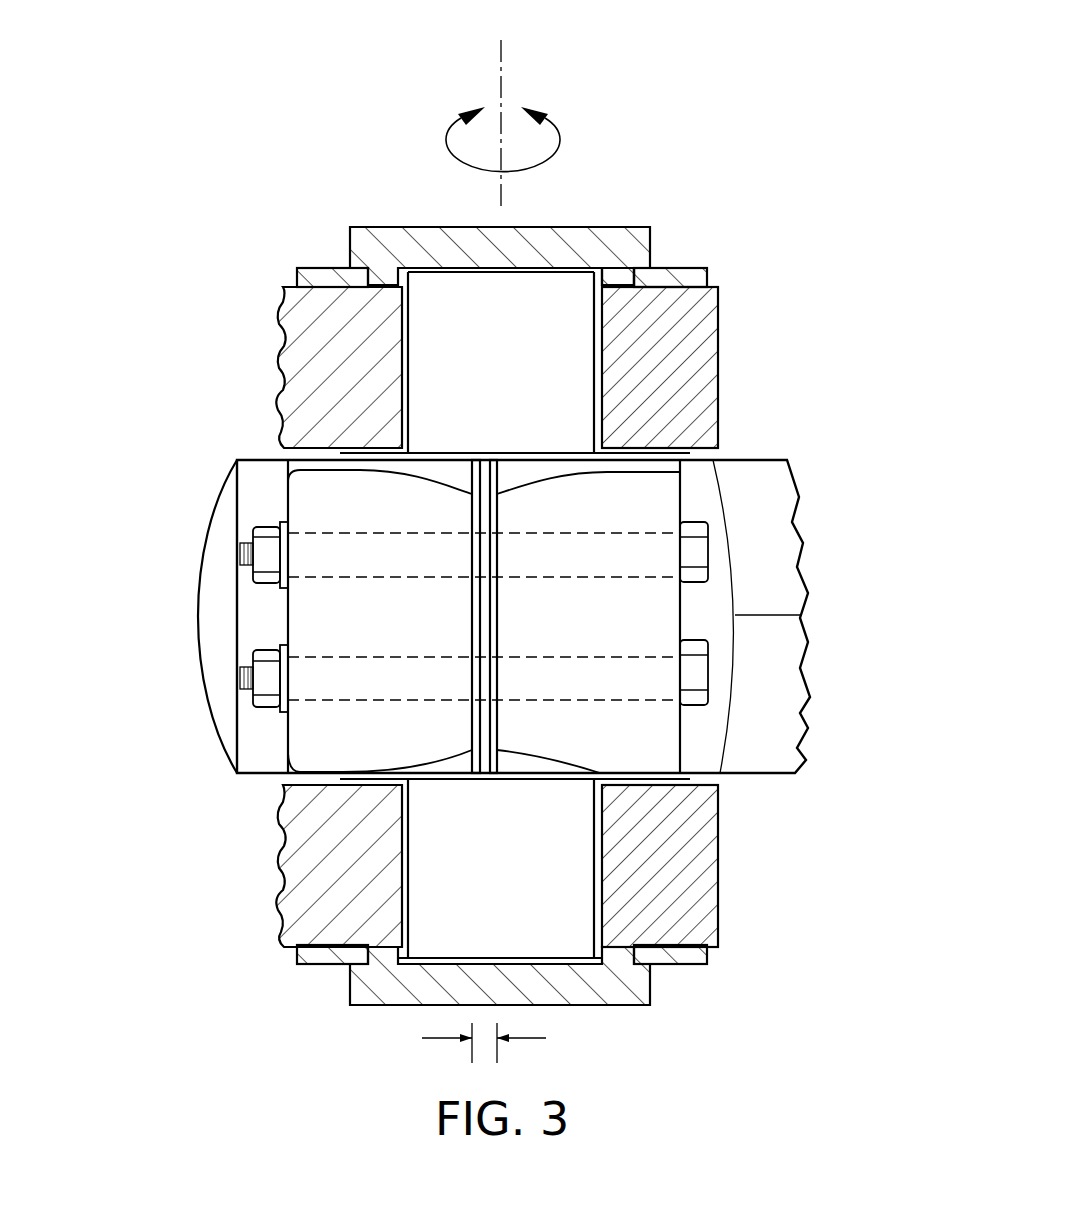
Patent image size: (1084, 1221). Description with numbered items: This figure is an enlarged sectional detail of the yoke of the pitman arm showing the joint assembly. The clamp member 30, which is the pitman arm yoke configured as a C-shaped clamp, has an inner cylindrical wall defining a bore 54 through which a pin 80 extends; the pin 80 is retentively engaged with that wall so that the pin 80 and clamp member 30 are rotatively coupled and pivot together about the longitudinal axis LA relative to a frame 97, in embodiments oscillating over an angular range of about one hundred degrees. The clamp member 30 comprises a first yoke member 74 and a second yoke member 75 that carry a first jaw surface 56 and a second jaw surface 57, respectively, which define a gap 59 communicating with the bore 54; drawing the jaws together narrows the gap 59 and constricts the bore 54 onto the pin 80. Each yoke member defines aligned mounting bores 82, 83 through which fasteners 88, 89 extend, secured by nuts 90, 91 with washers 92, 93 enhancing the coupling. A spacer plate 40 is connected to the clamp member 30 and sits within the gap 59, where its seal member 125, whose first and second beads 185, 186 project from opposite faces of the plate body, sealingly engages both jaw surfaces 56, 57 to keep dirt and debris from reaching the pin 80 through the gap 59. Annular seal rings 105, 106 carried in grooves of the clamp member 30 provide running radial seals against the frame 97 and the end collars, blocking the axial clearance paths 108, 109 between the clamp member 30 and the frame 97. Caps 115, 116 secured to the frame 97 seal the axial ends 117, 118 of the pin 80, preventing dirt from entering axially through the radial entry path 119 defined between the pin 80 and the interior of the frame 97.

The longitudinal axis LA is at (501, 58).
The clamp member 30 is at (330, 610).
The spacer plate 40 is at (497, 633).
The bore 54 is at (533, 448).
The first jaw surface 56 is at (487, 583).
The second jaw surface 57 is at (643, 725).
The gap 59 is at (490, 1062).
The first yoke member 74 is at (478, 665).
The second yoke member 75 is at (480, 683).
The pin 80 is at (430, 300).
The mounting bore 82 is at (337, 575).
The mounting bore 83 is at (307, 703).
The fastener 88 is at (695, 545).
The fastener 89 is at (700, 673).
The nut 90 is at (267, 532).
The nut 91 is at (263, 657).
The washer 92 is at (285, 595).
The washer 93 is at (287, 627).
The frame 97 is at (330, 352).
The seal ring 105 is at (292, 453).
The seal ring 106 is at (283, 787).
The axial clearance path 108 is at (684, 455).
The axial clearance path 109 is at (698, 777).
The cap 115 is at (380, 227).
The cap 116 is at (393, 1008).
The axial end 117 is at (603, 227).
The axial end 118 is at (472, 957).
The radial entry path 119 is at (396, 283).
The seal member 125 is at (233, 773).
The first bead 185 is at (300, 740).
The second bead 186 is at (500, 708).